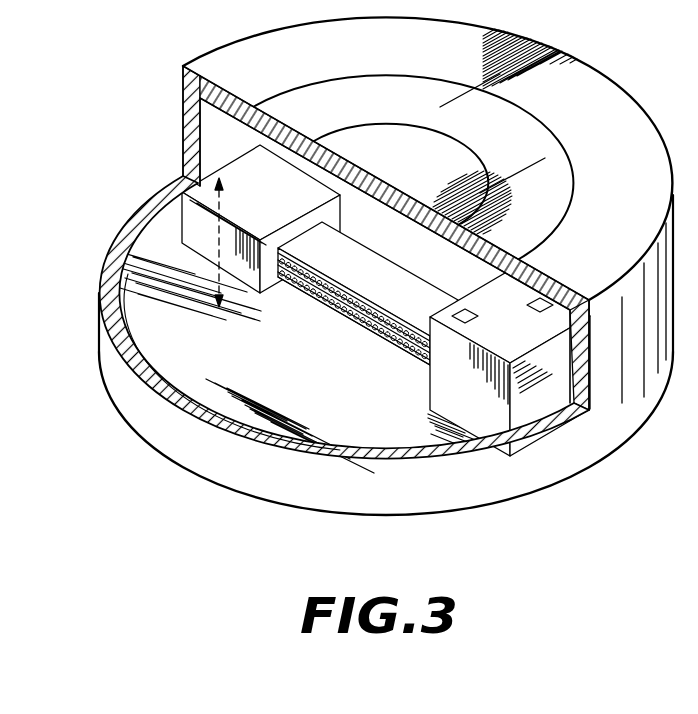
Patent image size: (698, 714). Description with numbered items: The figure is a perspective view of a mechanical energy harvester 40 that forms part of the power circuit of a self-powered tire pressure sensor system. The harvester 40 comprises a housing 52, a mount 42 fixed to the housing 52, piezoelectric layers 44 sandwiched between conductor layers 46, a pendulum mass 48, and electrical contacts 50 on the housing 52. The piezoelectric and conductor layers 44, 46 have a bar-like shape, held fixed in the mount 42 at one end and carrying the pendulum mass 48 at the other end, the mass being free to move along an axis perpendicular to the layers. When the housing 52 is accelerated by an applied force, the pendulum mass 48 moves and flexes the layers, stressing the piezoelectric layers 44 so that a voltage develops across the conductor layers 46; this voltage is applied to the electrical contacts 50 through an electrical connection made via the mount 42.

The mechanical energy harvester 40 is at (109, 81).
The mount 42 is at (520, 336).
The piezoelectric layers 44 is at (392, 322).
The conductor layers 46 is at (318, 298).
The pendulum mass 48 is at (277, 199).
The electrical contacts 50 is at (502, 143).
The housing 52 is at (184, 437).